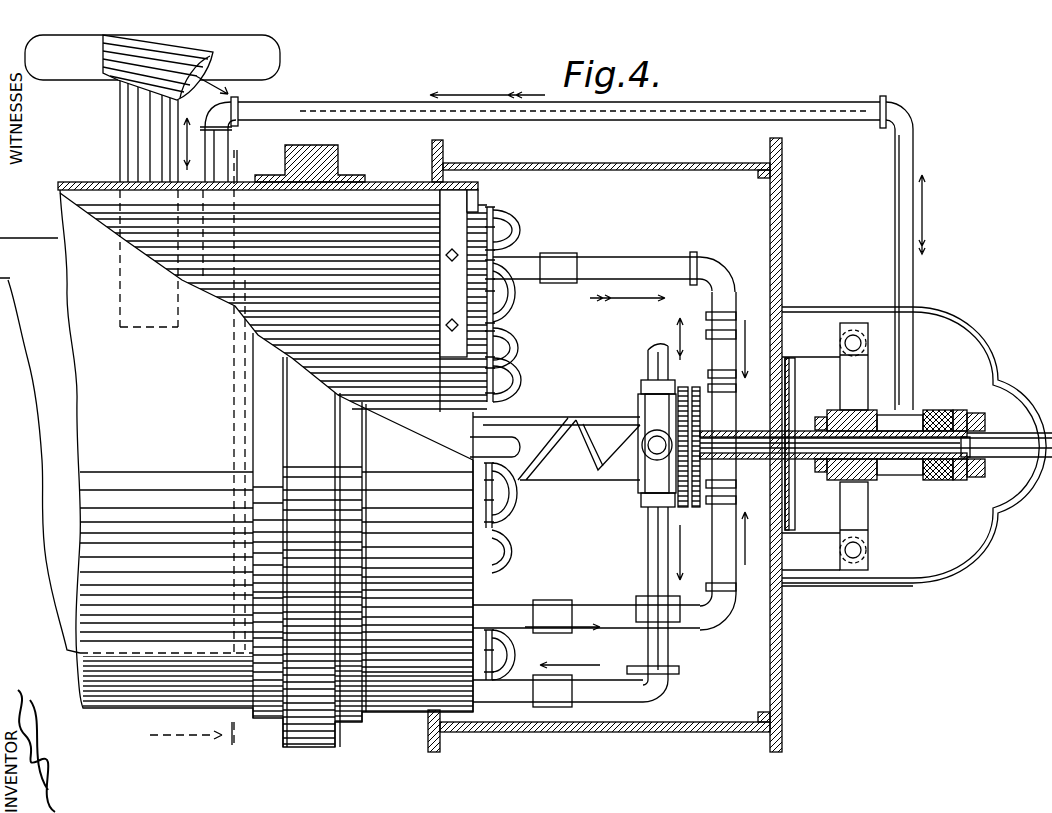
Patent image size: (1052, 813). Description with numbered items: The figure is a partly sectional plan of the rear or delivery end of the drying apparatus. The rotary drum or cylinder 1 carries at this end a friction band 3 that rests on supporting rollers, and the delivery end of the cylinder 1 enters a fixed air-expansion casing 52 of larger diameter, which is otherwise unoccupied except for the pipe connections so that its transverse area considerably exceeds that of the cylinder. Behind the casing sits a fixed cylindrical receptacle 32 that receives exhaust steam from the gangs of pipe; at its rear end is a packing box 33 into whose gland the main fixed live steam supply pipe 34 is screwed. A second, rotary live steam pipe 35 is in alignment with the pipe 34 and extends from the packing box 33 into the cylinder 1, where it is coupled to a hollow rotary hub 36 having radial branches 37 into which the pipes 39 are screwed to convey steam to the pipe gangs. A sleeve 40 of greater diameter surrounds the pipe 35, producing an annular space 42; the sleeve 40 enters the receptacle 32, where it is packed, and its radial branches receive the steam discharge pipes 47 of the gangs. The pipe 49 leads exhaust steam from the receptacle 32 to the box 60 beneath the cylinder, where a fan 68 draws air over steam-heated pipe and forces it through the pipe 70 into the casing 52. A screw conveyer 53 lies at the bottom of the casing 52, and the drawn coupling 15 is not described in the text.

The rotary drum or cylinder 1 is at (372, 183).
The friction band 3 is at (332, 165).
The flanged coupling and shaft tube 15 is at (732, 411).
The fixed cylindrical receptacle 32 is at (945, 405).
The packing box 33 is at (942, 470).
The main fixed live steam supply pipe 34 is at (1017, 458).
The rotary live steam pipe 35 is at (893, 450).
The hollow rotary hub 36 is at (637, 471).
The radial branches 37 is at (638, 508).
The pipes 39 is at (646, 362).
The sleeve 40 is at (802, 424).
The annular space 42 is at (810, 472).
The steam discharge pipes 47 is at (668, 262).
The pipe 49 is at (918, 292).
The fixed air-expansion casing 52 is at (628, 159).
The screw conveyer 53 is at (522, 437).
The box 60 is at (50, 410).
The fan 68 is at (177, 67).
The pipe 70 is at (135, 136).